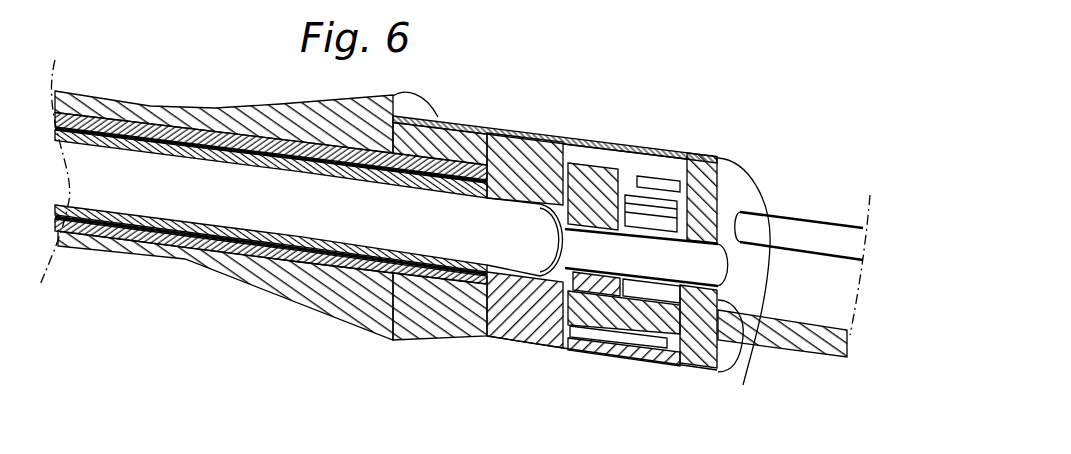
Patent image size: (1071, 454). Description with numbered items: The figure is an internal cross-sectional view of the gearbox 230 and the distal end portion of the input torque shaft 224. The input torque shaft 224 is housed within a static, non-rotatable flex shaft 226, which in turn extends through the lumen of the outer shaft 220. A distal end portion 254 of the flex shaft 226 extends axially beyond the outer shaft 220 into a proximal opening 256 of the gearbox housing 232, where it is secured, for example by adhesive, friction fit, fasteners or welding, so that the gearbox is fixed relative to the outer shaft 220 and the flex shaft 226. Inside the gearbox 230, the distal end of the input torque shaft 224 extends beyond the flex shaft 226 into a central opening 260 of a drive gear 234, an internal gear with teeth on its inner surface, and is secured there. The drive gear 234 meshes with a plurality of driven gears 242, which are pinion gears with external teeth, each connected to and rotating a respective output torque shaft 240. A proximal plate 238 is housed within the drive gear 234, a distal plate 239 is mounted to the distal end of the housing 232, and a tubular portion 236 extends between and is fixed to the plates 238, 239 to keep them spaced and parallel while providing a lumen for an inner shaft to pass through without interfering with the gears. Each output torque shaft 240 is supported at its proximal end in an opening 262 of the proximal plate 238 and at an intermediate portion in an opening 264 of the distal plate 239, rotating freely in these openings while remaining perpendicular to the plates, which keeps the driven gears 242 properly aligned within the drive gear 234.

The outer shaft 220 is at (83, 247).
The input torque shaft 224 is at (102, 160).
The static flex shaft 226 is at (133, 232).
The gearbox 230 is at (597, 242).
The gearbox housing 232 is at (437, 312).
The drive gear 234 is at (495, 285).
The tubular portion 236 is at (566, 270).
The proximal plate 238 is at (535, 138).
The distal plate 239 is at (733, 182).
The output torque shaft 240 is at (833, 228).
The driven gear 242 is at (657, 183).
The distal end portion of the flex shaft 254 is at (467, 145).
The proximal opening 256 is at (438, 118).
The central opening 260 is at (550, 297).
The opening in the proximal plate 262 is at (607, 327).
The opening in the distal plate 264 is at (752, 347).